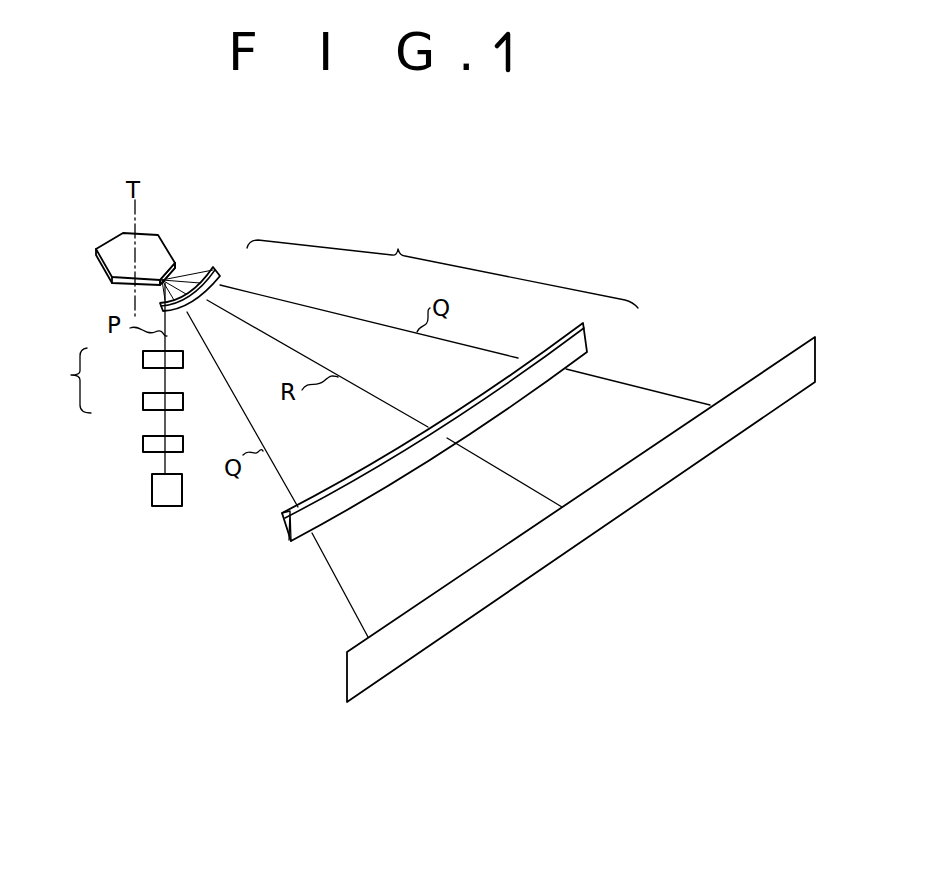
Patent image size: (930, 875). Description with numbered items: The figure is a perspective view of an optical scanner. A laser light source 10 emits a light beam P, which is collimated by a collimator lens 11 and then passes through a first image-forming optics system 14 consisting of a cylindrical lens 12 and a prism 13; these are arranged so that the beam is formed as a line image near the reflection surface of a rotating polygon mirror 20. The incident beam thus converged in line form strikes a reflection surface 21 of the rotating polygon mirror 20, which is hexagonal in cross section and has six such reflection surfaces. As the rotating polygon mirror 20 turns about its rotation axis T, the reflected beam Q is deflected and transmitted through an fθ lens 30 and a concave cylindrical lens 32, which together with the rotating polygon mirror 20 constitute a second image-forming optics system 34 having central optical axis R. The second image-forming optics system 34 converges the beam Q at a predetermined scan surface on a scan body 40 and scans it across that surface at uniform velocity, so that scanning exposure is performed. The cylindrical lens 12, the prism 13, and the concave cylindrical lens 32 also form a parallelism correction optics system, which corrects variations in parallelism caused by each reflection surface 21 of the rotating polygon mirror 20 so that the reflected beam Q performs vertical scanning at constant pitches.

The light source 10 is at (153, 490).
The collimator lens 11 is at (144, 443).
The cylindrical lens 12 is at (144, 402).
The prism 13 is at (144, 360).
The first image-forming optics system 14 is at (105, 401).
The rotating polygon mirror 20 is at (158, 235).
The reflection surface 21 is at (178, 261).
The fθ lens 30 is at (217, 269).
The concave cylindrical lens 32 is at (590, 342).
The second image-forming optics system 34 is at (442, 264).
The scan body 40 is at (815, 365).